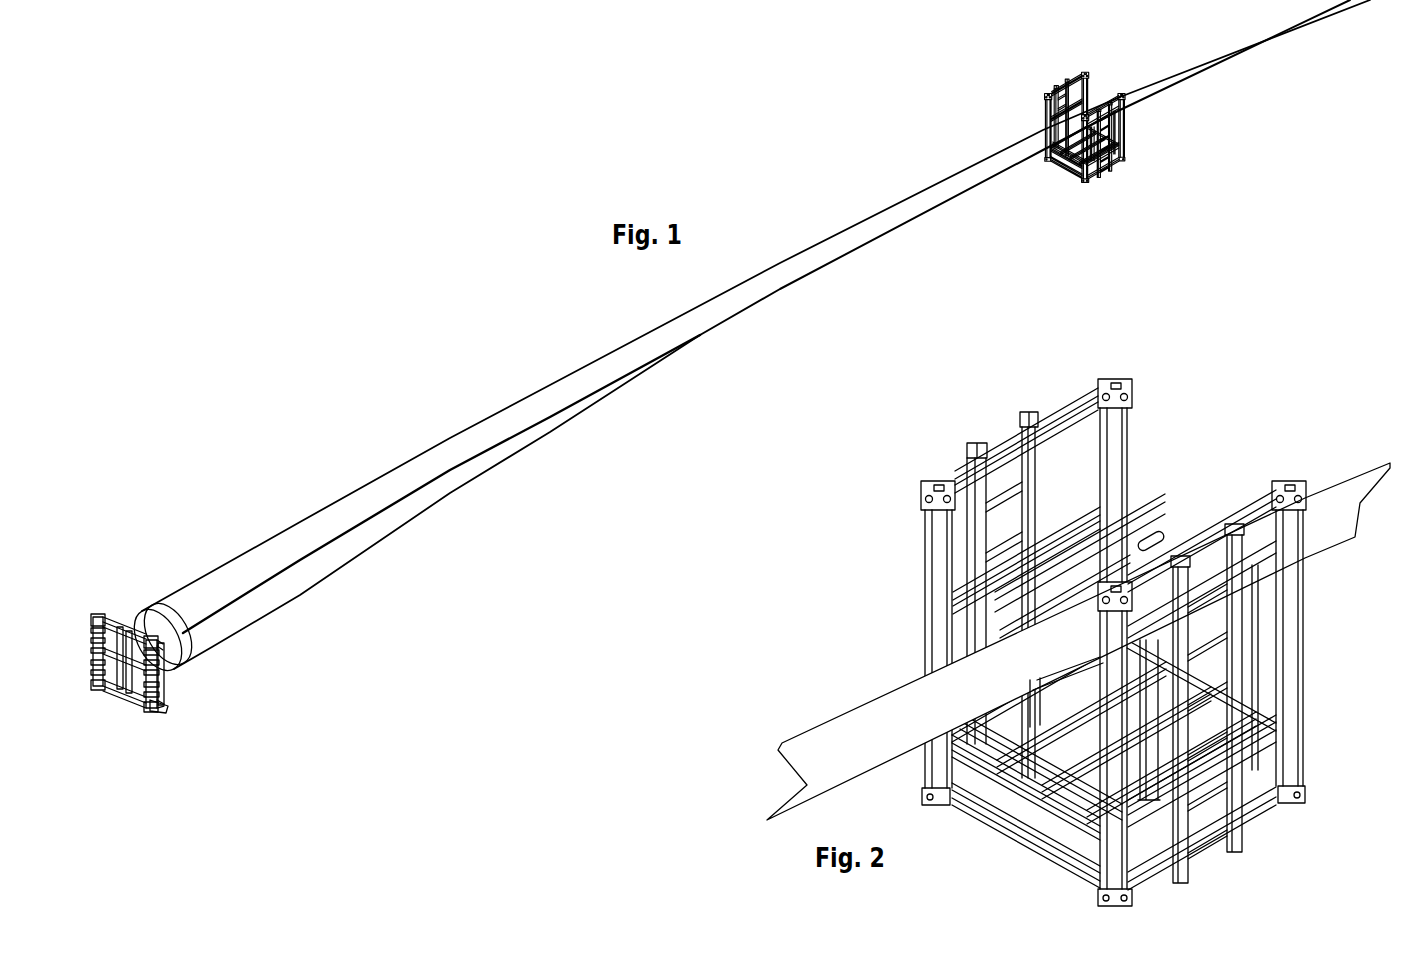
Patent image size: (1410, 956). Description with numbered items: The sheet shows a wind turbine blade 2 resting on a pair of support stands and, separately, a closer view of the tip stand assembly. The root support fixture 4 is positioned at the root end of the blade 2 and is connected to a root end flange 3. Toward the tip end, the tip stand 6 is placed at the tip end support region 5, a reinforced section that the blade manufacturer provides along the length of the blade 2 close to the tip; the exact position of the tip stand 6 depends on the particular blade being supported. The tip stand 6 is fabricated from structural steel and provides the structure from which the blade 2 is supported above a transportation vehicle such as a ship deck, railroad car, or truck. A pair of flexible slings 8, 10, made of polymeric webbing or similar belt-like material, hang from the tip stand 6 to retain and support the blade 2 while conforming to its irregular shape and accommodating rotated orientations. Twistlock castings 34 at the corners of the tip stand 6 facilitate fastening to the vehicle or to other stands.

In FIG. 1, the wind turbine blade 2 is at (790, 285).
In FIG. 1, the root end flange 3 is at (125, 614).
In FIG. 1, the root support fixture 4 is at (156, 711).
In FIG. 1, the tip end support region 5 is at (1088, 101).
In FIG. 1, the tip stand 6 is at (1122, 157).
In FIG. 2, the tip stand 6 is at (1078, 619).
In FIG. 2, the blade support sling 8 is at (1092, 662).
In FIG. 2, the blade support sling 10 is at (1150, 532).
In FIG. 2, the twistlock casting 34 is at (1127, 377).